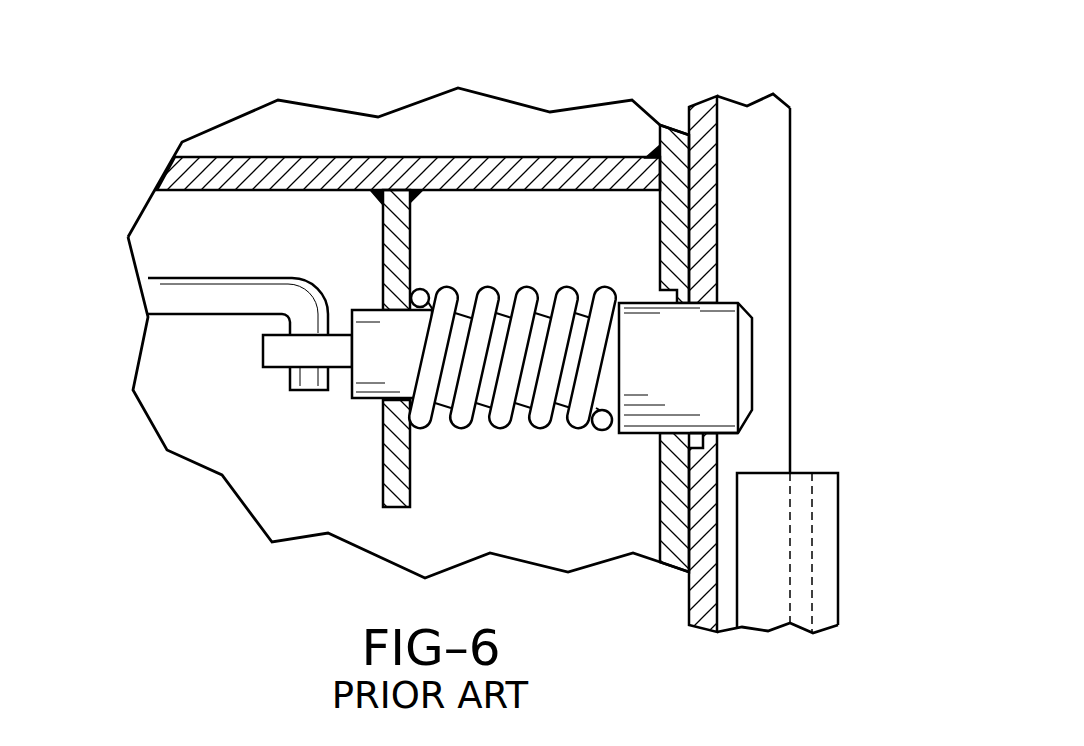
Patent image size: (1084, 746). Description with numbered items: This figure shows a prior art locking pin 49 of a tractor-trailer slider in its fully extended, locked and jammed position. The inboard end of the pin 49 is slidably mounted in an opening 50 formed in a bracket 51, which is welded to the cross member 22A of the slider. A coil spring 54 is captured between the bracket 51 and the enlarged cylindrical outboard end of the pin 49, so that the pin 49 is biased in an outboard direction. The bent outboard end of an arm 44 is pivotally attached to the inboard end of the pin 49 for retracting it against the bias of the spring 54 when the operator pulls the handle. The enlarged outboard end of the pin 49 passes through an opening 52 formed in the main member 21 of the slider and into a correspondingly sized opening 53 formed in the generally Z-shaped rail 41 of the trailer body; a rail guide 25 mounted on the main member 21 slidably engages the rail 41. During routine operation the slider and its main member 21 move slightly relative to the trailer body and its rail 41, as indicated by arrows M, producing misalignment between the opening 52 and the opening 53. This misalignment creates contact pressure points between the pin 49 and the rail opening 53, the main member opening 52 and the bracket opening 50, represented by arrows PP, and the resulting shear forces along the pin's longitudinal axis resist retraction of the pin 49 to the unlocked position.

The cross member 22A is at (365, 140).
The main member 21 is at (645, 531).
The rail 41 is at (717, 117).
The arm 44 is at (165, 293).
The prior art locking pin 49 is at (741, 417).
The opening 50 is at (396, 413).
The bracket 51 is at (398, 488).
The opening 52 is at (673, 298).
The opening 53 is at (707, 432).
The coil spring 54 is at (482, 311).
The rail guide 25 is at (822, 570).
The arrows PP is at (397, 336).
The arrows M is at (702, 62).